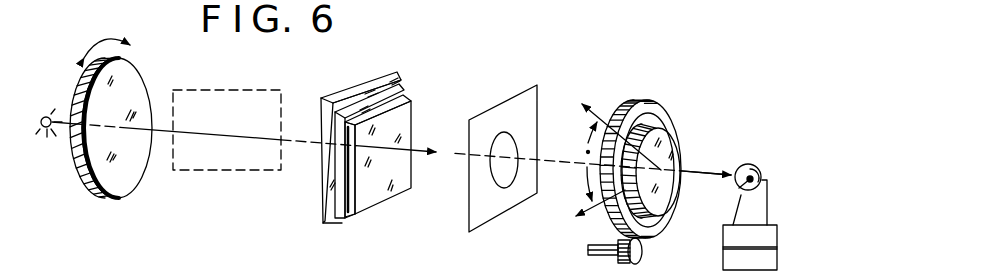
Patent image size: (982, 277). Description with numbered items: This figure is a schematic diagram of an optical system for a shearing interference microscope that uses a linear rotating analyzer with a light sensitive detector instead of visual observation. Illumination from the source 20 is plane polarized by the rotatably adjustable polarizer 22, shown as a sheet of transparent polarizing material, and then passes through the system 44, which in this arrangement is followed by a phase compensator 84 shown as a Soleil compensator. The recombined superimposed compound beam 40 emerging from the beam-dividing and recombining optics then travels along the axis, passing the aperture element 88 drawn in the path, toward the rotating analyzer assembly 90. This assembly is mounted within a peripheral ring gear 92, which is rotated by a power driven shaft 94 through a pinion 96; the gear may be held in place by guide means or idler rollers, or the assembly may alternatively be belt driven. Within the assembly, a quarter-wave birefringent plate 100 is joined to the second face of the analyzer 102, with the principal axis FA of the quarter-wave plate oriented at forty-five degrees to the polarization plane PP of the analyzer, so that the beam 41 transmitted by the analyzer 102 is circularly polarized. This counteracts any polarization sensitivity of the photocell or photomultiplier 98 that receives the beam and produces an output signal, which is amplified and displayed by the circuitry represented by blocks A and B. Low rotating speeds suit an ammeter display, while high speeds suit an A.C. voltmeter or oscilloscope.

The source 20 is at (45, 134).
The rotatably adjustable polarizer 22 is at (120, 180).
The system 44 is at (236, 178).
The phase compensator 84 is at (338, 86).
The compound beam 40 is at (416, 158).
The aperture plate 88 is at (509, 131).
The rotating analyzer assembly 90 is at (645, 158).
The peripheral ring gear 92 is at (633, 103).
The analyzer 102 is at (653, 124).
The quarter-wave birefringent plate 100 is at (665, 153).
The power driven shaft 94 is at (600, 251).
The pinion 96 is at (637, 259).
The photocell or photomultiplier 98 is at (757, 164).
The beam transmitted by analyzer 41 is at (703, 179).